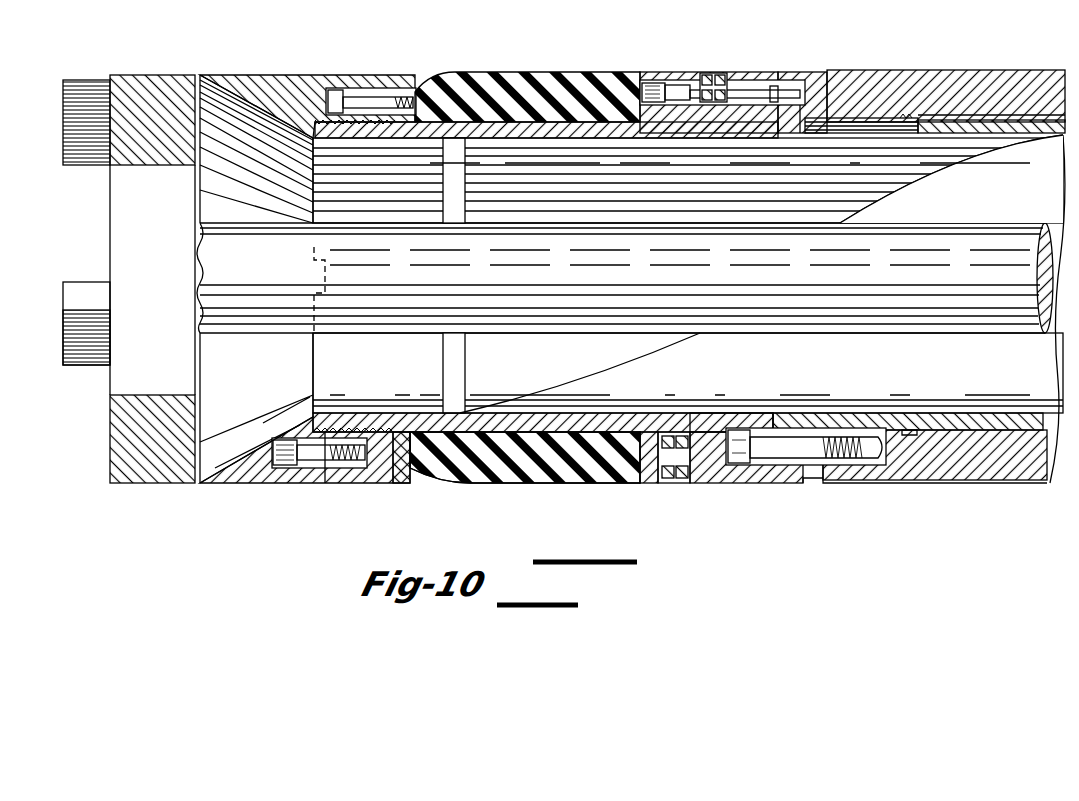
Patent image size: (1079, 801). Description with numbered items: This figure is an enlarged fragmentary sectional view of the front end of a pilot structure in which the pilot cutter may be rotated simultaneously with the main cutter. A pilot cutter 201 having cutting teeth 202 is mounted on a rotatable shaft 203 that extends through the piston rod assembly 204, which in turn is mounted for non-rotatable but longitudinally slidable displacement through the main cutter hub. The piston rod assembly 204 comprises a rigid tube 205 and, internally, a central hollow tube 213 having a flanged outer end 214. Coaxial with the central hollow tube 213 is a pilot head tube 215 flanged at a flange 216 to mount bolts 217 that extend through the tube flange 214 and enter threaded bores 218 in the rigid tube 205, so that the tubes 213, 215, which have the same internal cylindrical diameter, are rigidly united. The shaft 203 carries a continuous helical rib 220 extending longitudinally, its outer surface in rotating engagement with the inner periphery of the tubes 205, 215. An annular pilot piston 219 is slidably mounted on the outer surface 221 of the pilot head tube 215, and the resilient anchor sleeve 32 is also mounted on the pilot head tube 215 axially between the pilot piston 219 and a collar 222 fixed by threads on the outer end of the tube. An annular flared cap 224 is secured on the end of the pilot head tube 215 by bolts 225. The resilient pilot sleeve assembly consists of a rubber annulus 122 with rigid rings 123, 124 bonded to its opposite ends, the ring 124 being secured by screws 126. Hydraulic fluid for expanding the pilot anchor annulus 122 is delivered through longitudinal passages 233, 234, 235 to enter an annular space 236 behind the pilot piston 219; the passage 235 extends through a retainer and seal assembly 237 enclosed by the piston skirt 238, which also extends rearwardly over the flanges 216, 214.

The resilient anchor sleeve 32 is at (517, 483).
The rubber annulus 122 is at (547, 473).
The rigid ring 123 is at (410, 483).
The rigid ring 124 is at (653, 483).
The screws 126 is at (660, 73).
The pilot cutter 201 is at (138, 473).
The cutting teeth 202 is at (110, 332).
The rotatable shaft 203 is at (227, 322).
The piston rod assembly 204 is at (880, 481).
The rigid tube 205 is at (938, 467).
The central hollow tube 213 is at (365, 430).
The flanged outer end 214 is at (818, 85).
The pilot head tube 215 is at (680, 427).
The flange 216 is at (767, 483).
The bolts 217 is at (743, 430).
The threaded bores 218 is at (847, 430).
The annular pilot piston 219 is at (682, 483).
The helical rib 220 is at (915, 192).
The outer surface 221 is at (618, 432).
The collar 222 is at (352, 483).
The annular flared cap 224 is at (305, 475).
The bolts 225 is at (283, 440).
The longitudinal passage 233 is at (975, 115).
The longitudinal passage 234 is at (813, 133).
The longitudinal passage 235 is at (697, 100).
The annular space 236 is at (690, 127).
The retainer and seal assembly 237 is at (717, 77).
The piston skirt 238 is at (783, 82).